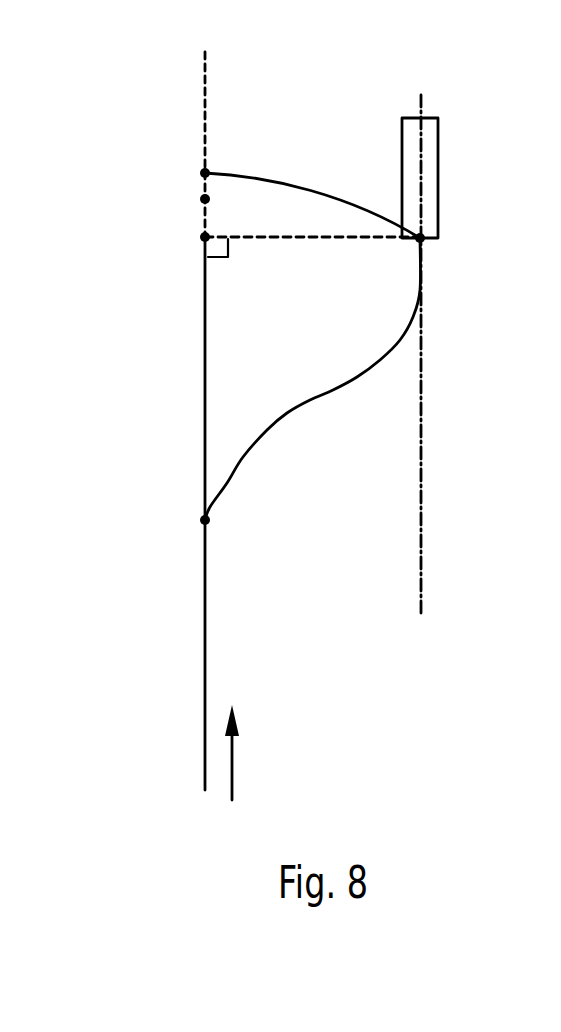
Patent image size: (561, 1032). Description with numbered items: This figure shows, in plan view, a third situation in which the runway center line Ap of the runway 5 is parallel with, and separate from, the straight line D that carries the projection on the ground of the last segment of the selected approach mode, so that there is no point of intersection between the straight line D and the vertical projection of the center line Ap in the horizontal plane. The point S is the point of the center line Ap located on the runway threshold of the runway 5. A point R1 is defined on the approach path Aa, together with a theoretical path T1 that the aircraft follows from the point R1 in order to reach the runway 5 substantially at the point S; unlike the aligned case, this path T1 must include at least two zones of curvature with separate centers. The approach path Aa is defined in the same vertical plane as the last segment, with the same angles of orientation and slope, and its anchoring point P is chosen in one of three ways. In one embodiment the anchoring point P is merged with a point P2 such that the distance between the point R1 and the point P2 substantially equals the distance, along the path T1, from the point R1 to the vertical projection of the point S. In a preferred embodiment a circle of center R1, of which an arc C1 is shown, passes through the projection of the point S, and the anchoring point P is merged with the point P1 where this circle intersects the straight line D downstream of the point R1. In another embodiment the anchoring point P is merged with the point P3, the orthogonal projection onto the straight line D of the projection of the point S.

The straight line D is at (192, 100).
The anchoring point P is at (165, 173).
The point P1 is at (209, 171).
The point P2 is at (208, 198).
The point P3 is at (203, 240).
The arc of circle C1 is at (330, 158).
The runway 5 is at (428, 178).
The runway threshold point S is at (424, 241).
The theoretical path T1 is at (327, 420).
The point R1 is at (210, 522).
The runway center line Ap is at (423, 503).
The approach path Aa is at (238, 662).